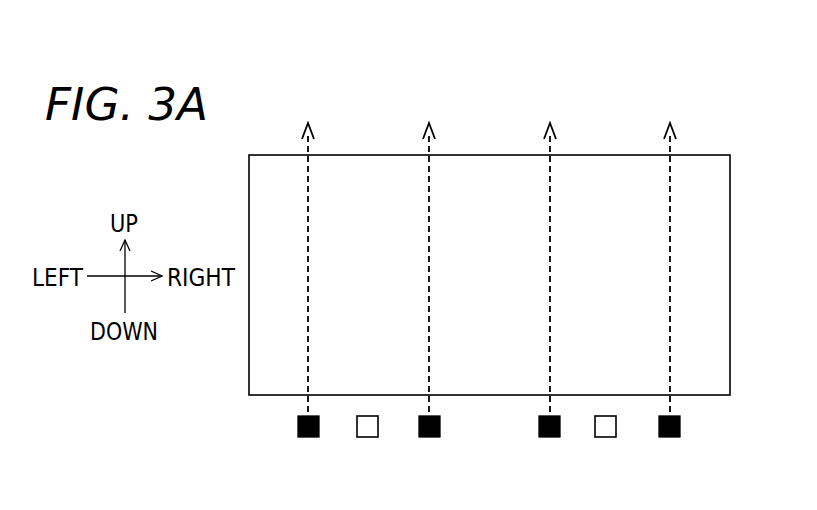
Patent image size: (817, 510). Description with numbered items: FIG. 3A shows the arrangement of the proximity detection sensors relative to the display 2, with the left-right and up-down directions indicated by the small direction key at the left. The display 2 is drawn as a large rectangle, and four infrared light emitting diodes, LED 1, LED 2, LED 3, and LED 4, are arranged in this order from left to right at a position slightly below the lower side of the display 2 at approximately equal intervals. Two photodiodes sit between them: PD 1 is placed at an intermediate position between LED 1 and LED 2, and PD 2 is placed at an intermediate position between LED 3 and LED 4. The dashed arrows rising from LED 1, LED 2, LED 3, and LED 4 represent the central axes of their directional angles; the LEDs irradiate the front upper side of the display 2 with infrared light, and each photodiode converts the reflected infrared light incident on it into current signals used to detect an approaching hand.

The display 2 is at (730, 318).
The LED 1 LED1 is at (307, 446).
The PD 1 PD1 is at (364, 446).
The LED 2 LED2 is at (429, 446).
The LED 3 LED3 is at (550, 446).
The PD 2 PD2 is at (607, 446).
The LED 4 LED4 is at (672, 446).